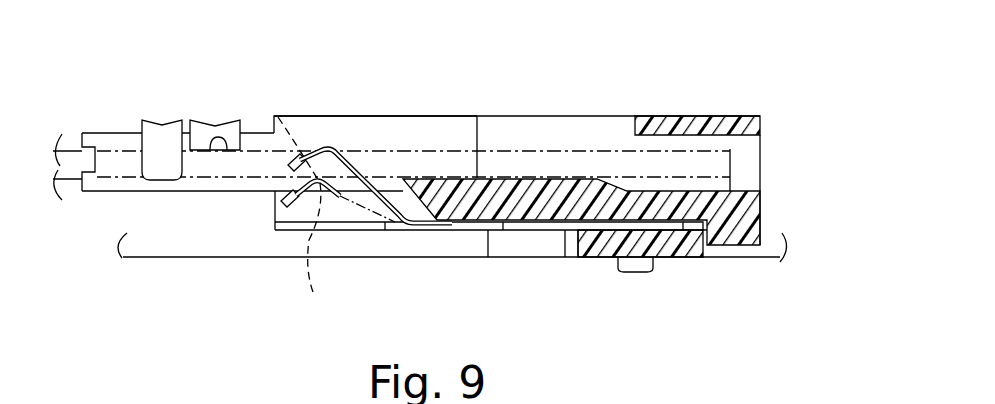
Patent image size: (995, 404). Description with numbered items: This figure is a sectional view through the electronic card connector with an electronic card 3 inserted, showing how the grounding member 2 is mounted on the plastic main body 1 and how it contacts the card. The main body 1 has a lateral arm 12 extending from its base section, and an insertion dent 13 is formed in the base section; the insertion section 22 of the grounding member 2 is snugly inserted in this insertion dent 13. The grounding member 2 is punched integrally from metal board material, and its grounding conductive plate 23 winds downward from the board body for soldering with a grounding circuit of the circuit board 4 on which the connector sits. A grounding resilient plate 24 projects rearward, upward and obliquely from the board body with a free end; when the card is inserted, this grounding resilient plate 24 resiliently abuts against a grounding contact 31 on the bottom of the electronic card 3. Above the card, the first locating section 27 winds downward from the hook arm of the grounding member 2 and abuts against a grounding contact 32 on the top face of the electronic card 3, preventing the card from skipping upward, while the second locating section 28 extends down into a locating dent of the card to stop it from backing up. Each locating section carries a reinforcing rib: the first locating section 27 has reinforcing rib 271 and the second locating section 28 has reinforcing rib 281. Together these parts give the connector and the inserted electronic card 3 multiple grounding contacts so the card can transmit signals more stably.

The plastic main body 1 is at (645, 114).
The grounding member 2 is at (320, 116).
The electronic card 3 is at (517, 149).
The circuit board 4 is at (377, 257).
The lateral arm 12 is at (412, 117).
The insertion dent 13 is at (620, 226).
The insertion section 22 is at (668, 224).
The grounding conductive plate 23 is at (523, 248).
The grounding resilient plate 24 is at (333, 157).
The first locating section 27 is at (233, 118).
The second locating section 28 is at (150, 120).
The grounding contact 31 is at (278, 117).
The grounding contact 32 is at (222, 178).
The reinforcing rib 271 is at (213, 120).
The reinforcing rib 281 is at (160, 120).